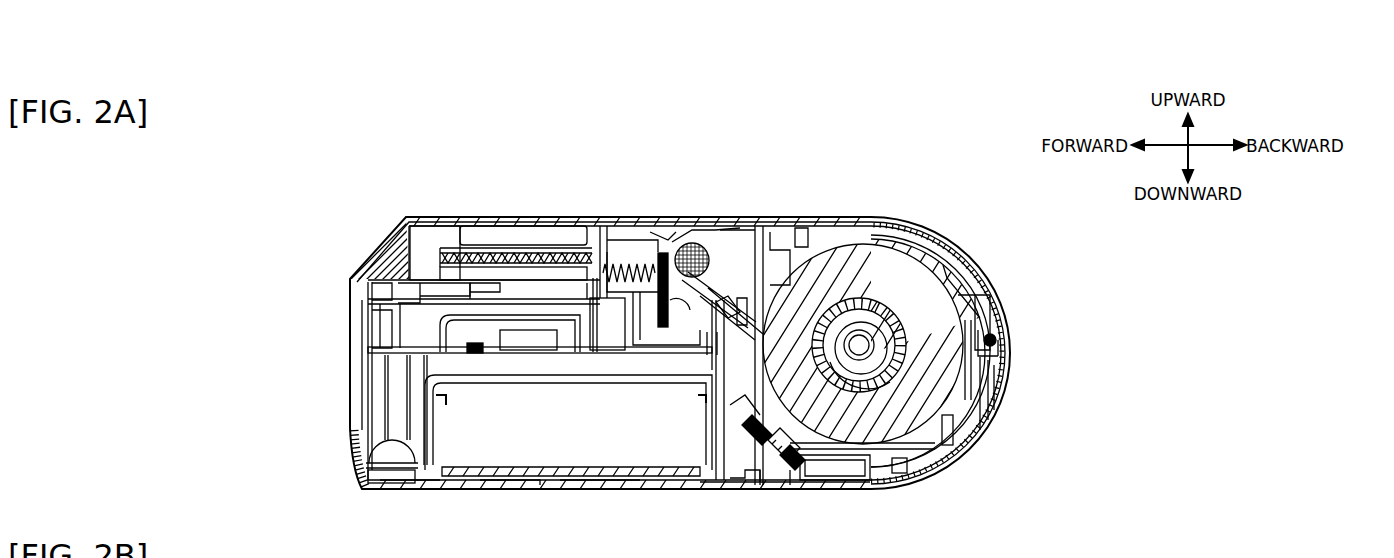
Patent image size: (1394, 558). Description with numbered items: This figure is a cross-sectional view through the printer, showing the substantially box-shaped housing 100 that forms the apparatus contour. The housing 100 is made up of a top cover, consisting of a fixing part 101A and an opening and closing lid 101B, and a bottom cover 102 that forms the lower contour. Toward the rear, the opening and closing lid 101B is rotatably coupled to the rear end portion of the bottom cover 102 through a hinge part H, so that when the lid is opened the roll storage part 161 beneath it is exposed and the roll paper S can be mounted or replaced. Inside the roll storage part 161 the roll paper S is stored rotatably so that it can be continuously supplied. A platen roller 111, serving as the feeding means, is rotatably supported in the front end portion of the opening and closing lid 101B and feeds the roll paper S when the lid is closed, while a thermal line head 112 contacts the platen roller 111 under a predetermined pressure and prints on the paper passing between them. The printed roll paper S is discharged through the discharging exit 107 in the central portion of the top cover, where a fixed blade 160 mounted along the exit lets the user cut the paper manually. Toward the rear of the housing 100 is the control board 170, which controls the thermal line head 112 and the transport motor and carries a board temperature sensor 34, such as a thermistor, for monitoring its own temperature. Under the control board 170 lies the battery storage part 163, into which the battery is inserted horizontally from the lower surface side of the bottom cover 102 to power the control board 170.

The housing 100 is at (336, 236).
The fixing part 101A is at (419, 217).
The opening and closing lid 101B is at (951, 256).
The bottom cover 102 is at (736, 490).
The discharging exit 107 is at (680, 236).
The platen roller 111 is at (760, 240).
The thermal line head 112 is at (574, 390).
The fixed blade 160 is at (676, 236).
The roll storage part 161 is at (800, 450).
The battery storage part 163 is at (628, 420).
The control board 170 is at (492, 354).
The board temperature sensor 34 is at (466, 349).
The roll paper S is at (903, 270).
The hinge part H is at (1002, 332).